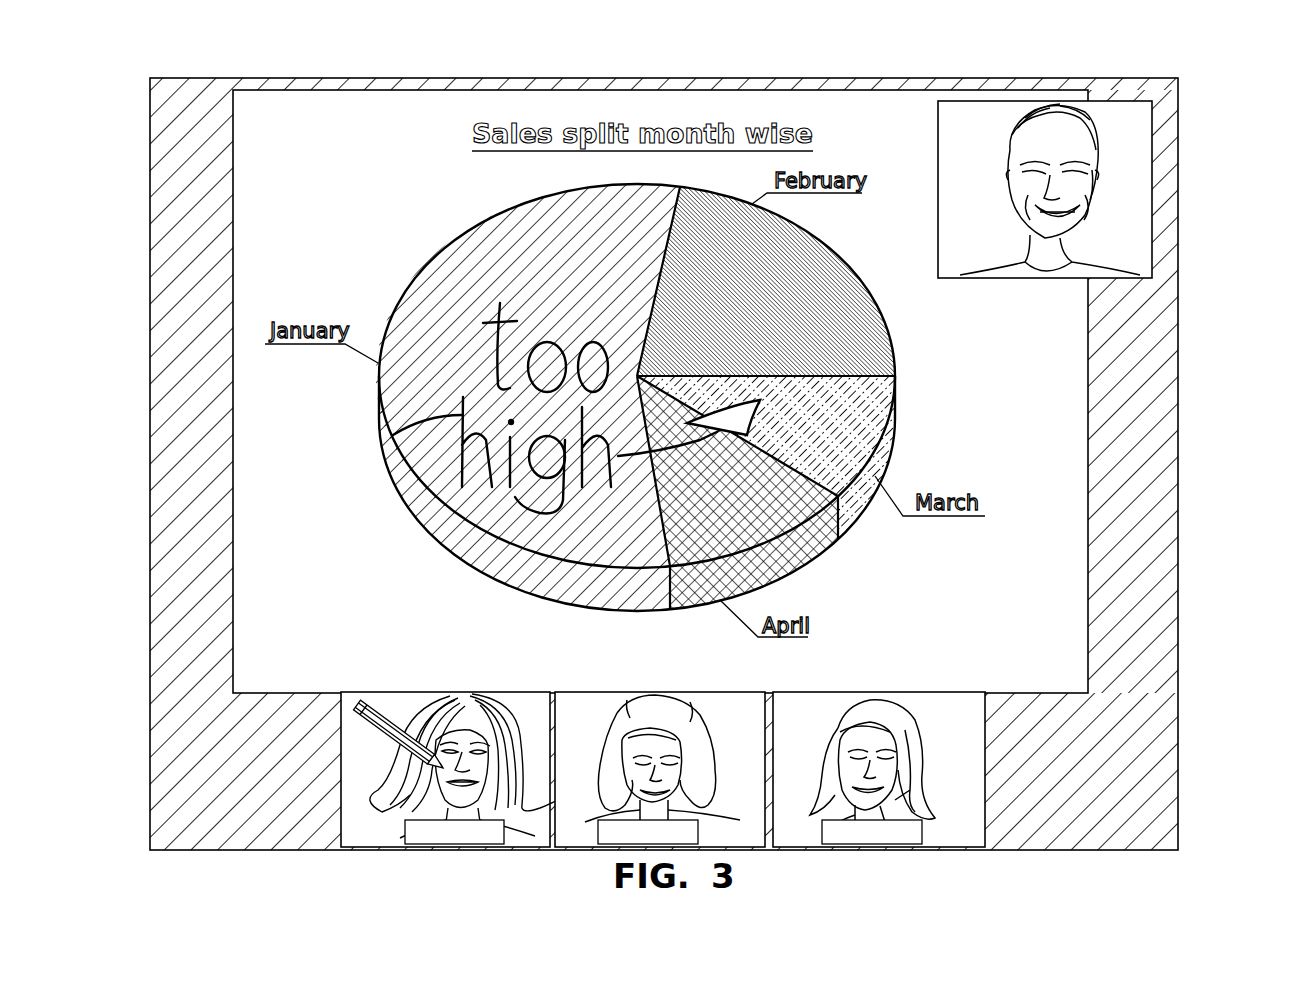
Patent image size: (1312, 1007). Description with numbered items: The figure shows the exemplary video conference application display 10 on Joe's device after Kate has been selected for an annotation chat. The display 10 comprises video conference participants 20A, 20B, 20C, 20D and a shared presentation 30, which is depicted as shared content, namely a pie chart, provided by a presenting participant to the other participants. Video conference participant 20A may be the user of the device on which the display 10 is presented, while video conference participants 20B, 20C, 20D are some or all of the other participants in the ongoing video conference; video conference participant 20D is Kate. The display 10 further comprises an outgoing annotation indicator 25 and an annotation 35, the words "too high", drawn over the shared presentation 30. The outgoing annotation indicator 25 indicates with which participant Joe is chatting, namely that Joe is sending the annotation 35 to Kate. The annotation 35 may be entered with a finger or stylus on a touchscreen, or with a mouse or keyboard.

The video conference application display 10 is at (1232, 128).
The shared presentation 30 is at (272, 108).
The video conference participant 20A is at (990, 100).
The video conference participant 20B is at (942, 690).
The video conference participant 20C is at (705, 690).
The video conference participant 20D is at (516, 690).
The outgoing annotation indicator 25 is at (393, 704).
The annotation 35 is at (385, 455).